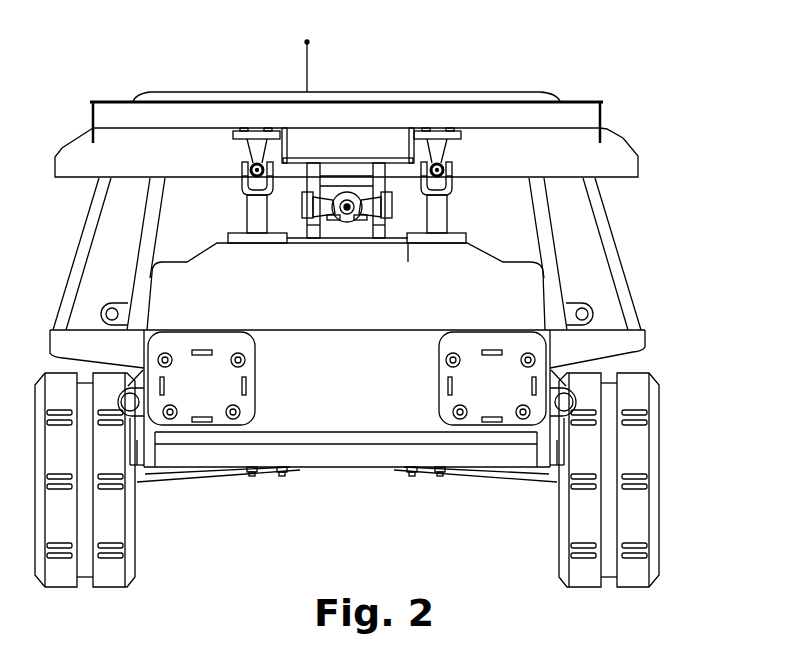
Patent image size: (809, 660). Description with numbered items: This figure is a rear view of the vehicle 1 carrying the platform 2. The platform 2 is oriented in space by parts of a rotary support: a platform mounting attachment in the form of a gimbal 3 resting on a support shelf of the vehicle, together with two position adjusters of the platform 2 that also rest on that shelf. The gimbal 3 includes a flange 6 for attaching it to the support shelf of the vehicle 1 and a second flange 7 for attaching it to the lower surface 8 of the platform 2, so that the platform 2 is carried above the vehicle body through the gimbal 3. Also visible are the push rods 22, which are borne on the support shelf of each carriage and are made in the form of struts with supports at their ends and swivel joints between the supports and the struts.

The vehicle 1 is at (372, 382).
The platform 2 is at (346, 100).
The gimbal 3 is at (313, 130).
The flange 6 is at (337, 263).
The flange 7 is at (346, 140).
The lower surface 8 is at (358, 106).
The push rods 22 is at (347, 185).